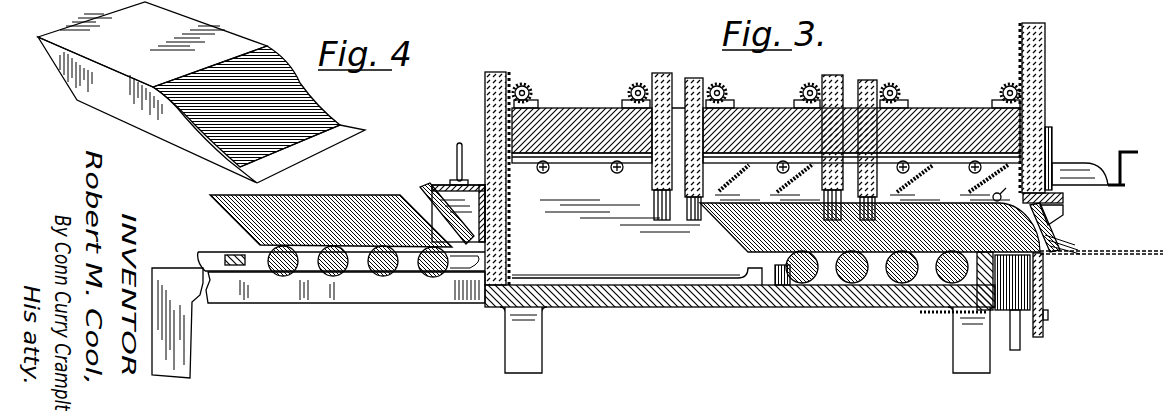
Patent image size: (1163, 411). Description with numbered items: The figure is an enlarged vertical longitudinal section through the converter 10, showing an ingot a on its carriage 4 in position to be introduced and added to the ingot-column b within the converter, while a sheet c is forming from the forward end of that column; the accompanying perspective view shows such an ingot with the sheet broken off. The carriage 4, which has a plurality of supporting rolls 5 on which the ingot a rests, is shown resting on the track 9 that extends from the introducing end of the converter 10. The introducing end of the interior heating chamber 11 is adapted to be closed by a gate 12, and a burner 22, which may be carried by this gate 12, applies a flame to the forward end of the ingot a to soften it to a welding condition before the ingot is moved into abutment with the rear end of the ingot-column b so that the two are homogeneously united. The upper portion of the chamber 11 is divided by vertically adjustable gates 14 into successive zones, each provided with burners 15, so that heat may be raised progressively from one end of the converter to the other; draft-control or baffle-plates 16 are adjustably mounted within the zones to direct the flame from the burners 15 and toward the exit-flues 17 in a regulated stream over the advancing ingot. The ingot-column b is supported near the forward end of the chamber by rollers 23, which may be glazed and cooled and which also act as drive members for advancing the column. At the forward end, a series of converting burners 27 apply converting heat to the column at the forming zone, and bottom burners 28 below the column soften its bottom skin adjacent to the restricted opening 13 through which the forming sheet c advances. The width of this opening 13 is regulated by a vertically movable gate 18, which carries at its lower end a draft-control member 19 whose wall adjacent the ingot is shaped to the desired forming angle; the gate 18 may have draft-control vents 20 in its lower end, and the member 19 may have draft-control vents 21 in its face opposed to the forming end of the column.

In FIG. 3, the carriage 4 is at (357, 266).
In FIG. 3, the supporting rolls 5 is at (426, 270).
In FIG. 3, the track 9 is at (288, 285).
In FIG. 3, the converter 10 is at (673, 304).
In FIG. 3, the heating chamber 11 is at (651, 242).
In FIG. 3, the gate 12 is at (491, 121).
In FIG. 3, the restricted opening 13 is at (1043, 256).
In FIG. 3, the vertically adjustable gates 14 is at (678, 103).
In FIG. 3, the burners 15 is at (618, 173).
In FIG. 3, the baffle-plates 16 is at (778, 187).
In FIG. 3, the exit-flues 17 is at (706, 81).
In FIG. 3, the vertically movable gate 18 is at (1041, 86).
In FIG. 3, the draft-control member 19 is at (1058, 228).
In FIG. 3, the draft-control vents 20 is at (1050, 161).
In FIG. 3, the draft-control vents 21 is at (1052, 220).
In FIG. 3, the burner 22 is at (439, 184).
In FIG. 3, the rollers 23 is at (905, 275).
In FIG. 3, the converting burners 27 is at (1008, 186).
In FIG. 3, the bottom burners 28 is at (1046, 305).
In FIG. 3, the ingot a is at (328, 203).
In FIG. 4, the ingot-column b is at (120, 103).
In FIG. 3, the ingot-column b is at (848, 238).
In FIG. 4, the sheet c is at (345, 128).